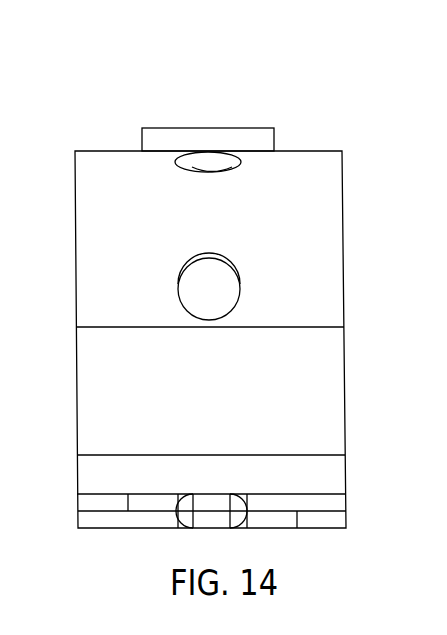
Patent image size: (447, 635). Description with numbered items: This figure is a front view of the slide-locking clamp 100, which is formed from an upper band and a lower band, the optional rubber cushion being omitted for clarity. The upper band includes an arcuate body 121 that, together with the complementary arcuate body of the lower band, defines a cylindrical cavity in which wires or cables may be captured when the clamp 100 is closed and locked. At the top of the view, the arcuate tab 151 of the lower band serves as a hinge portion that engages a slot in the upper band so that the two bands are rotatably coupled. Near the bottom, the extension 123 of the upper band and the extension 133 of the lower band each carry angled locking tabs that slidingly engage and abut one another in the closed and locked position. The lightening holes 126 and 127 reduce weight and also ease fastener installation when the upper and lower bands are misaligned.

The clamp 100 is at (80, 79).
The arcuate body 121 is at (332, 163).
The extension 123 is at (337, 502).
The lightening hole 126 is at (220, 280).
The lightening hole 127 is at (209, 151).
The extension 133 is at (337, 520).
The arcuate tab 151 is at (246, 136).